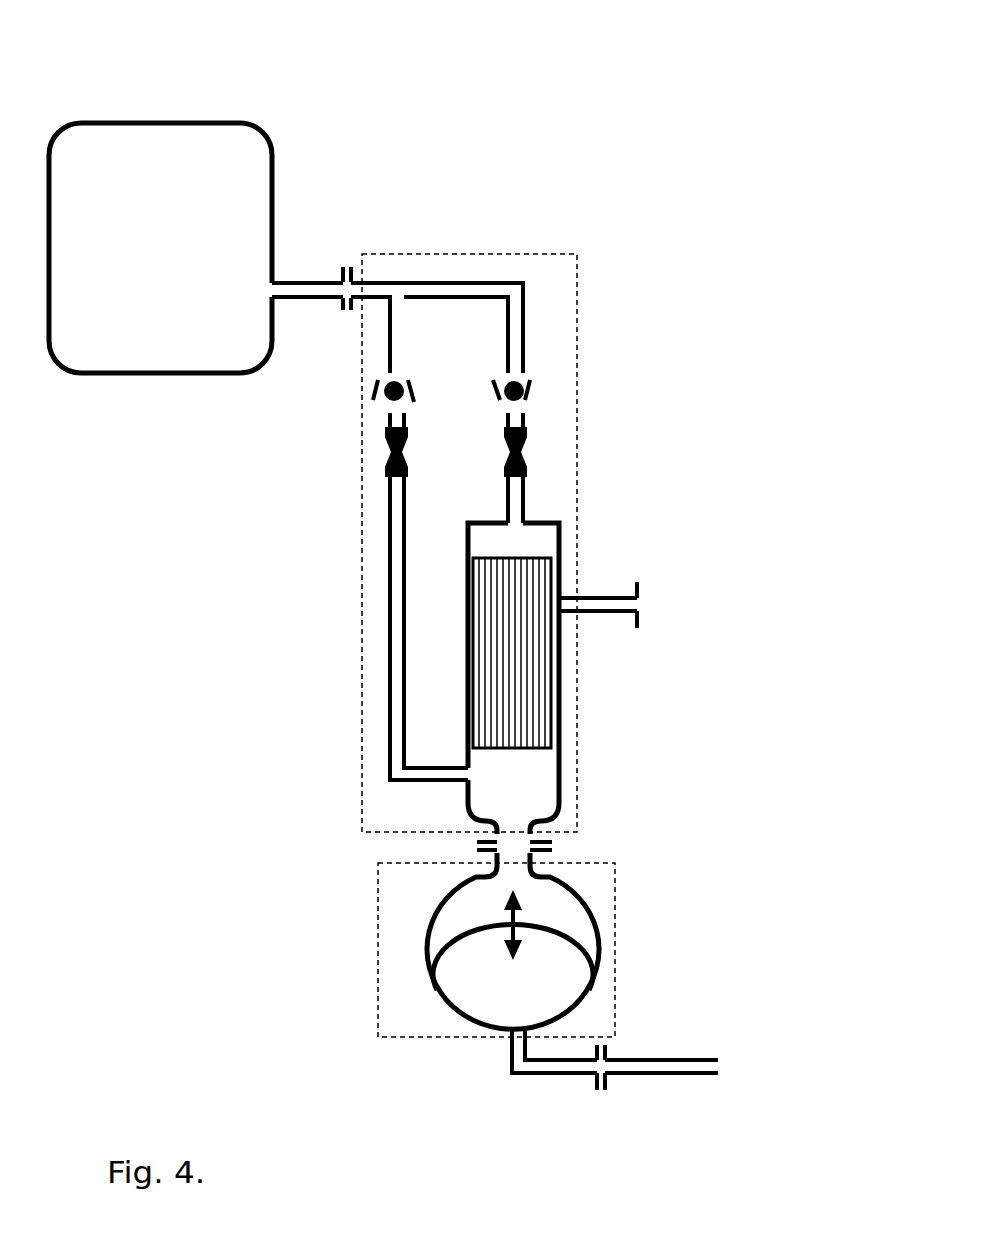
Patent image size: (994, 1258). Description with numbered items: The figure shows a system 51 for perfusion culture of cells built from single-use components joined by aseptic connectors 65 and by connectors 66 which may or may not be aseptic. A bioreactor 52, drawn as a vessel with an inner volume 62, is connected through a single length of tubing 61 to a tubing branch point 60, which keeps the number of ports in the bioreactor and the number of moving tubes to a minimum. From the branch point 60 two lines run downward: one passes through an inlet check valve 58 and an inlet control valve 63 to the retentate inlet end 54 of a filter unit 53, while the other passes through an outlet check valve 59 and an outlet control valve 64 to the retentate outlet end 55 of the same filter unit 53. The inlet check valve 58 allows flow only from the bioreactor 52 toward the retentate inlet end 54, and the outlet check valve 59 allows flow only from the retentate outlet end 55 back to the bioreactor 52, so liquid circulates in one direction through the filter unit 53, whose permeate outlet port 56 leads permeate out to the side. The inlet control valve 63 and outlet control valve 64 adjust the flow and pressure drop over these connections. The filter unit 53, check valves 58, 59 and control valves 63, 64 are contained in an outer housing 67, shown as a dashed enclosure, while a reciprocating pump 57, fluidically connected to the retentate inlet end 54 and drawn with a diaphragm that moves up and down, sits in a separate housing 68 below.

The system 51 is at (413, 90).
The bioreactor 52 is at (117, 122).
The inner volume 62 is at (185, 193).
The length of tubing 61 is at (295, 280).
The aseptic connectors 65 is at (352, 267).
The tubing branch point 60 is at (400, 288).
The inlet check valve 58 is at (392, 399).
The outlet check valve 59 is at (517, 380).
The inlet control valve 63 is at (393, 453).
The outlet control valve 64 is at (518, 445).
The retentate outlet end 55 is at (512, 523).
The filter unit 53 is at (558, 683).
The permeate outlet port 56 is at (578, 597).
The connectors 66 is at (638, 623).
The outer housing 67 is at (362, 630).
The retentate inlet end 54 is at (480, 773).
The separate housing 68 is at (373, 909).
The reciprocating pump 57 is at (435, 958).